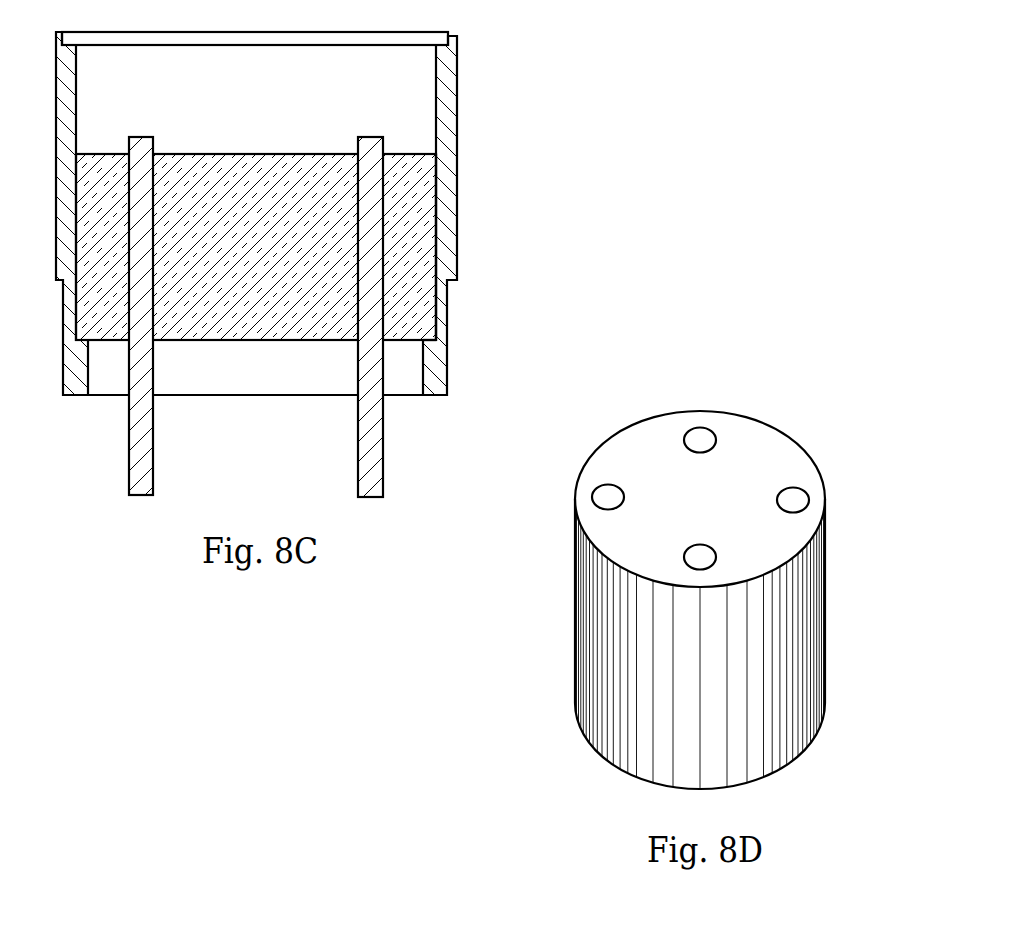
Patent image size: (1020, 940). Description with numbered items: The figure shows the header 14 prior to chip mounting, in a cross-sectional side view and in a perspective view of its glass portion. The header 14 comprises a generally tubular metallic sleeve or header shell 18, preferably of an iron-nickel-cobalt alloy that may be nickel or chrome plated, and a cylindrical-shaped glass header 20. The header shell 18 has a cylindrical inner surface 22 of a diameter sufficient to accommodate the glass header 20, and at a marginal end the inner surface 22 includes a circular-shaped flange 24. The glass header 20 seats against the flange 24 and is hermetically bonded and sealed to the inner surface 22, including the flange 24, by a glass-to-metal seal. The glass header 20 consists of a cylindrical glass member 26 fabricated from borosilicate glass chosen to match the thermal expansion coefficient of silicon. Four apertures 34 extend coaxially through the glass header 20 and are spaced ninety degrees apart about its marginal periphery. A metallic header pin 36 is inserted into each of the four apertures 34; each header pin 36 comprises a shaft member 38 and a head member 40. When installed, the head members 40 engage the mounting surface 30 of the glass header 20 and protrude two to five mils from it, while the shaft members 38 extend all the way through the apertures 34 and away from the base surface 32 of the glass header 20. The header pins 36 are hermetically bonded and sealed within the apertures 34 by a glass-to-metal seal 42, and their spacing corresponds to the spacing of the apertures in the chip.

In FIG. 8C, the header 14 is at (312, 213).
In FIG. 8C, the header shell 18 is at (450, 98).
In FIG. 8C, the glass header 20 is at (438, 252).
In FIG. 8C, the inner surface 22 is at (436, 80).
In FIG. 8C, the flange 24 is at (407, 338).
In FIG. 8D, the cylindrical glass member 26 is at (725, 611).
In FIG. 8C, the mounting surface 30 is at (218, 154).
In FIG. 8D, the mounting surface 30 is at (760, 466).
In FIG. 8C, the base surface 32 is at (215, 342).
In FIG. 8D, the base surface 32 is at (783, 768).
In FIG. 8D, the apertures 34 is at (700, 427).
In FIG. 8C, the header pin 36 is at (153, 458).
In FIG. 8C, the shaft member 38 is at (383, 172).
In FIG. 8C, the head member 40 is at (298, 285).
In FIG. 8C, the glass-to-metal seal 42 is at (56, 222).